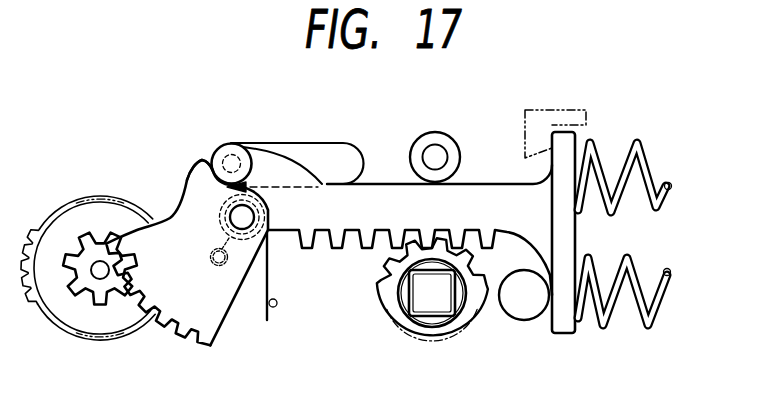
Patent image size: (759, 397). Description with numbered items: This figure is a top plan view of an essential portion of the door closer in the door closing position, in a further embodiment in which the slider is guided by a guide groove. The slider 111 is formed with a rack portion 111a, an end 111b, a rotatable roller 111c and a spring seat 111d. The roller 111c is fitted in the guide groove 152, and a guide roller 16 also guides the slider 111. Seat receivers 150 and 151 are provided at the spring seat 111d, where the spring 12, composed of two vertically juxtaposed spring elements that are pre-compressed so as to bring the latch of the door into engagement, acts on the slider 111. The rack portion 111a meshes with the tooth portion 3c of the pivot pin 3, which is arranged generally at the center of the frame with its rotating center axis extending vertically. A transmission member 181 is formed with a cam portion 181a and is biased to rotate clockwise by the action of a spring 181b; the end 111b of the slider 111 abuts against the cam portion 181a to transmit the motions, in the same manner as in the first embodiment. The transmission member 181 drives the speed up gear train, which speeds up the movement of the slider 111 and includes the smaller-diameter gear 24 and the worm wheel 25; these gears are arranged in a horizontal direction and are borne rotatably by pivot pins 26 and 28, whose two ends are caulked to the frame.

The pivot pin 3 is at (431, 300).
The tooth portion 3c is at (387, 270).
The spring 12 is at (633, 268).
The guide roller 16 is at (425, 140).
The smaller-diameter gear 24 is at (97, 300).
The worm wheel 25 is at (31, 294).
The pivot pin 26 is at (240, 218).
The pivot pin 28 is at (98, 268).
The slider 111 is at (353, 217).
The rack portion 111a is at (483, 190).
The end 111b is at (262, 160).
The rotatable roller 111c is at (218, 146).
The spring seat 111d is at (565, 318).
The seat receiver 150 is at (523, 306).
The seat receiver 151 is at (548, 132).
The guide groove 152 is at (310, 142).
The transmission member 181 is at (187, 203).
The cam portion 181a is at (192, 168).
The spring 181b is at (273, 277).